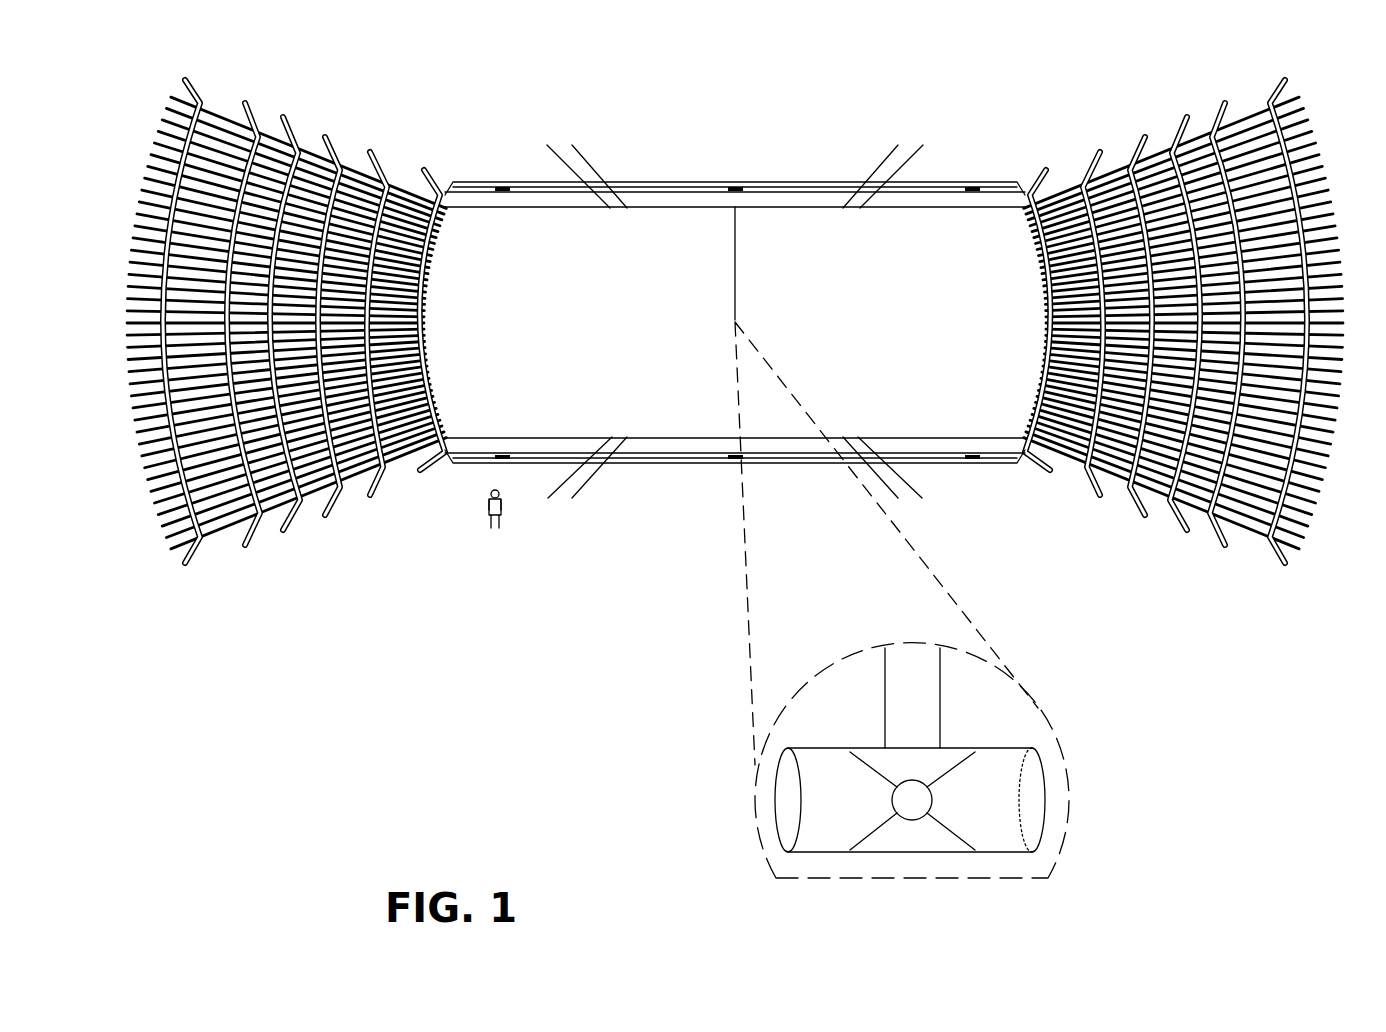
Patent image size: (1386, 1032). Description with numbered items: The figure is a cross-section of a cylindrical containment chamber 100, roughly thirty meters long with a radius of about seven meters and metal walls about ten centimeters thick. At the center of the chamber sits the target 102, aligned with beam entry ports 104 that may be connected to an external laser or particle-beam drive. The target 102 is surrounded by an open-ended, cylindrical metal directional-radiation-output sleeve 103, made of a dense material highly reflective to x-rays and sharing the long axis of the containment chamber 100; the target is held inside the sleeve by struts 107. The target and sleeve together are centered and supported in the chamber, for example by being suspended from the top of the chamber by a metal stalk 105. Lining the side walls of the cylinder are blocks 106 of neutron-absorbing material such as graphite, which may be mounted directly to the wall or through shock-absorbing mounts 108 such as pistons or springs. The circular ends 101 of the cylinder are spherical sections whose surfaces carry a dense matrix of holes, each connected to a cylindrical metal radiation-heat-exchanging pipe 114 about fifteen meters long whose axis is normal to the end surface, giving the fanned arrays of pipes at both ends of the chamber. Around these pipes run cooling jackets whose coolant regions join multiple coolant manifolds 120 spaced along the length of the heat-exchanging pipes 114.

The containment chamber 100 is at (848, 97).
The circular ends 101 is at (1062, 192).
The target 102 is at (913, 822).
The directional-radiation-output sleeve 103 is at (817, 748).
The beam entry ports 104 is at (577, 162).
The metal stalk 105 is at (733, 302).
The blocks 106 is at (672, 203).
The struts 107 is at (955, 842).
The shock-absorbing mounts 108 is at (973, 183).
The radiation-heat-exchanging pipe 114 is at (228, 528).
The coolant manifolds 120 is at (382, 187).